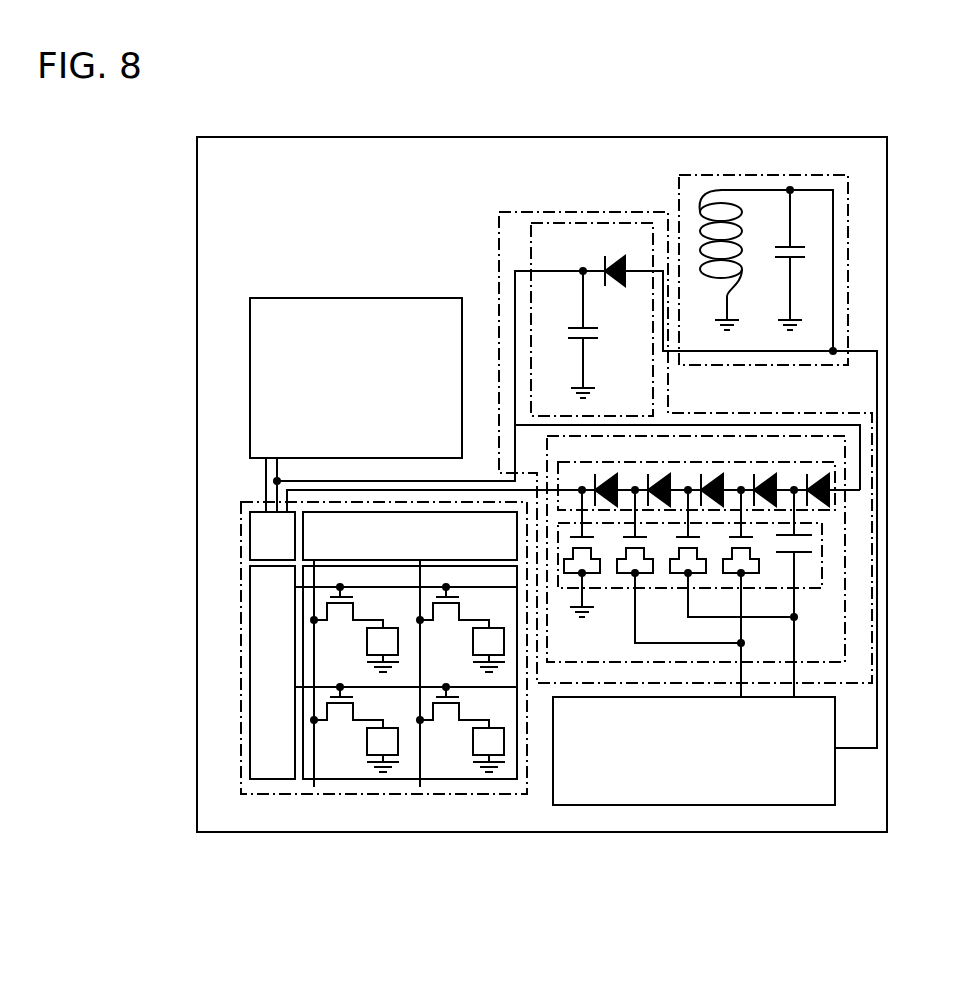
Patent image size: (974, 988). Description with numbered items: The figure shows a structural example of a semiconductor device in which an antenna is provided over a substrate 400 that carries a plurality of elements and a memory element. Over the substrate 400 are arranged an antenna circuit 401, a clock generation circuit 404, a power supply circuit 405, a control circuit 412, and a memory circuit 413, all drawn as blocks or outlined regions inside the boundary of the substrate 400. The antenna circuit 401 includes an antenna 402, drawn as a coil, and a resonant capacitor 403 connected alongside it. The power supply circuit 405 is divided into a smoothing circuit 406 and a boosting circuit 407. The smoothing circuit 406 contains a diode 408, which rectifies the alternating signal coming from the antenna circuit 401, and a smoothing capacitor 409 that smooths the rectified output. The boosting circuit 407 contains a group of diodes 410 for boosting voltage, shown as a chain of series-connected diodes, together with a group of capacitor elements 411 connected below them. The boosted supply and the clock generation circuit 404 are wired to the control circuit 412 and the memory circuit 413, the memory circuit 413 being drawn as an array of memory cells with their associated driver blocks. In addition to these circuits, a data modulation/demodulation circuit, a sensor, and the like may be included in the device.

The substrate 400 is at (303, 138).
The antenna circuit 401 is at (755, 175).
The antenna 402 is at (713, 200).
The resonant capacitor 403 is at (795, 247).
The clock generation circuit 404 is at (694, 751).
The power supply circuit 405 is at (513, 212).
The smoothing circuit 406 is at (572, 223).
The boosting circuit 407 is at (845, 650).
The diode 408 is at (605, 263).
The smoothing capacitor 409 is at (572, 330).
The group of diodes 410 is at (833, 493).
The group of capacitor elements 411 is at (822, 557).
The control circuit 412 is at (356, 378).
The memory circuit 413 is at (303, 794).